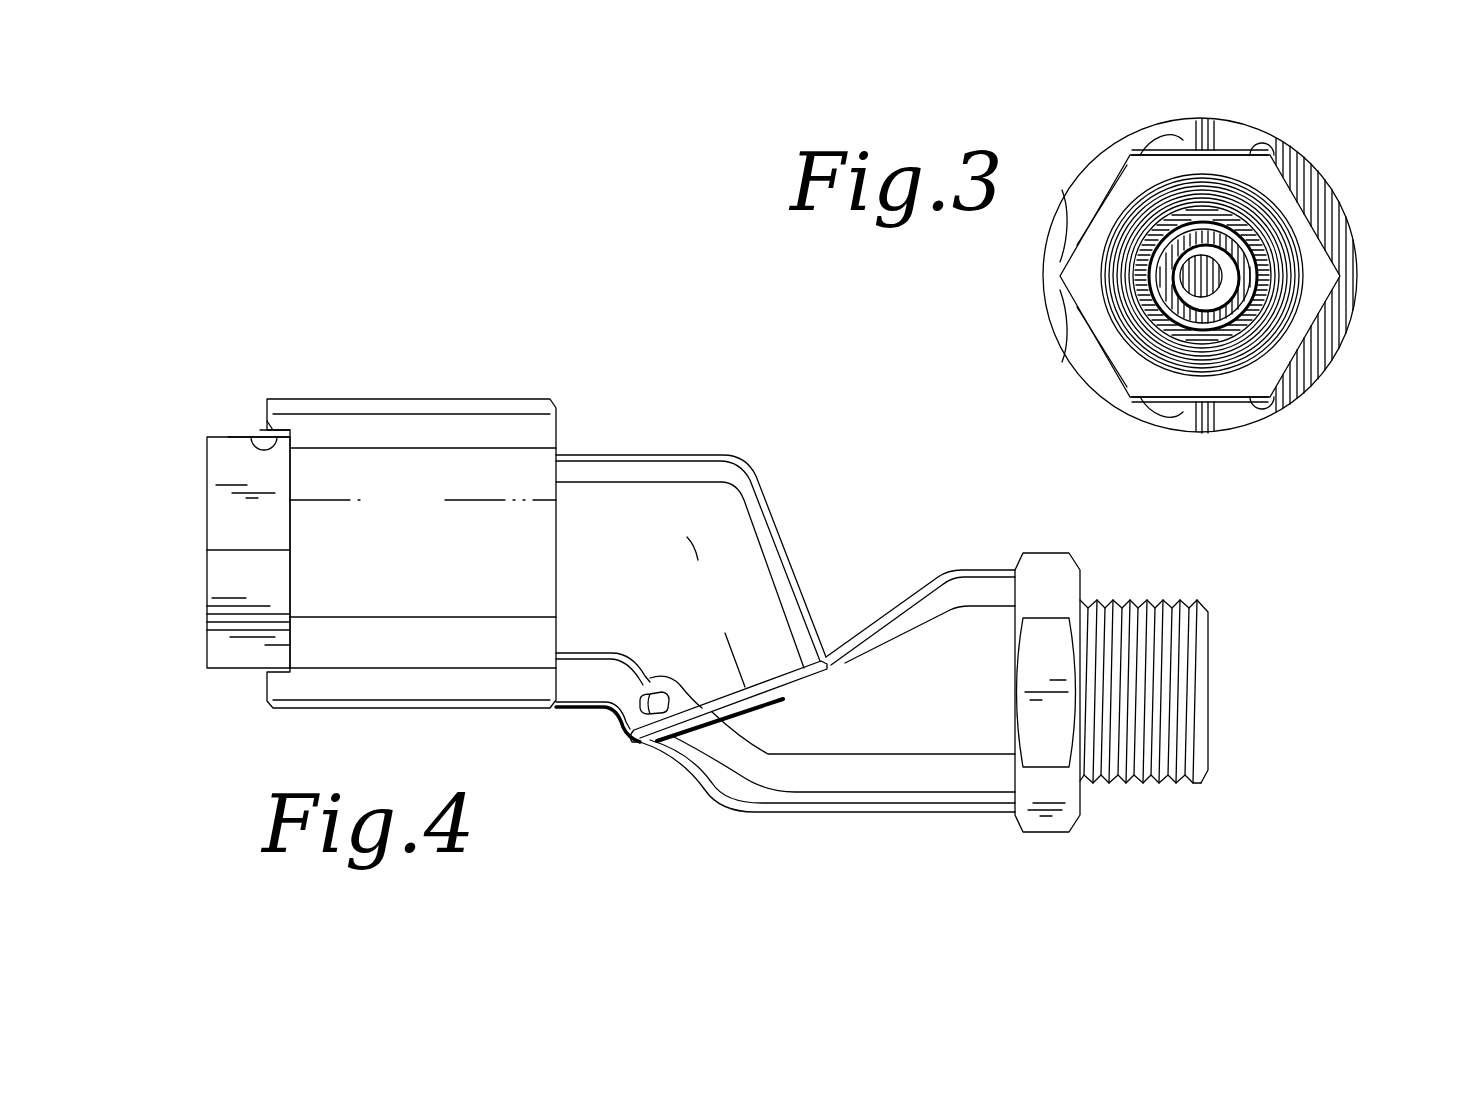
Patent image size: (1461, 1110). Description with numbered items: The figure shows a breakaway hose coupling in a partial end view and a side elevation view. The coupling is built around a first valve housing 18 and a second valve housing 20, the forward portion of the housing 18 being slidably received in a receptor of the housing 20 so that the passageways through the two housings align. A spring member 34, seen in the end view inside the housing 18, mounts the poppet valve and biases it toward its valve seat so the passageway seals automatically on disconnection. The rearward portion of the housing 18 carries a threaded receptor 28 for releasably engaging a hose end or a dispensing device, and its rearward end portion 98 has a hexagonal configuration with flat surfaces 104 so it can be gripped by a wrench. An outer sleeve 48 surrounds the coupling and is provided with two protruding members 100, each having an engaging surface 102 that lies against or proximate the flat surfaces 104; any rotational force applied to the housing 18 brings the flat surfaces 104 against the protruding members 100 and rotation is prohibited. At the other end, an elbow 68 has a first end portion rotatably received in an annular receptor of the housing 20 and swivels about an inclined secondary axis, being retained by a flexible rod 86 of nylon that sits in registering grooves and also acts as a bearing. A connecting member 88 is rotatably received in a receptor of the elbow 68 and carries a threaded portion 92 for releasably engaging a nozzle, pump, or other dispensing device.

In FIG. 4, the first valve housing 18 is at (233, 675).
In FIG. 4, the second valve housing 20 is at (608, 457).
In FIG. 3, the threaded receptor 28 is at (1299, 262).
In FIG. 3, the spring member 34 is at (1172, 262).
In FIG. 3, the outer sleeve 48 is at (1328, 178).
In FIG. 4, the outer sleeve 48 is at (418, 399).
In FIG. 4, the elbow 68 is at (893, 604).
In FIG. 4, the flexible rod 86 is at (655, 716).
In FIG. 4, the connecting member 88 is at (1053, 553).
In FIG. 4, the threaded portion 92 is at (1142, 602).
In FIG. 3, the rearward end portion 98 is at (1318, 255).
In FIG. 4, the rearward end portion 98 is at (218, 672).
In FIG. 3, the protruding member 100 is at (1209, 118).
In FIG. 4, the protruding member 100 is at (271, 402).
In FIG. 3, the engaging surface 102 is at (1279, 158).
In FIG. 4, the engaging surface 102 is at (251, 443).
In FIG. 3, the flat surface 104 is at (1132, 134).
In FIG. 4, the flat surface 104 is at (228, 437).